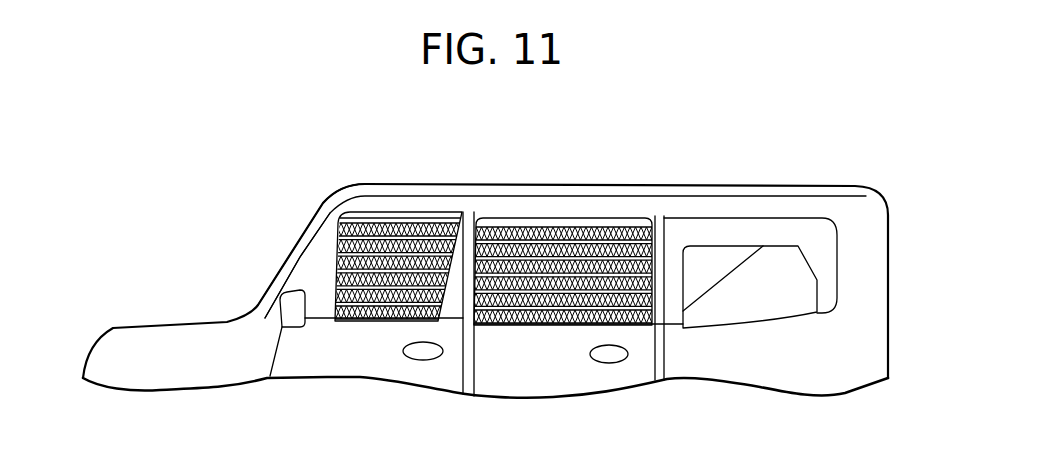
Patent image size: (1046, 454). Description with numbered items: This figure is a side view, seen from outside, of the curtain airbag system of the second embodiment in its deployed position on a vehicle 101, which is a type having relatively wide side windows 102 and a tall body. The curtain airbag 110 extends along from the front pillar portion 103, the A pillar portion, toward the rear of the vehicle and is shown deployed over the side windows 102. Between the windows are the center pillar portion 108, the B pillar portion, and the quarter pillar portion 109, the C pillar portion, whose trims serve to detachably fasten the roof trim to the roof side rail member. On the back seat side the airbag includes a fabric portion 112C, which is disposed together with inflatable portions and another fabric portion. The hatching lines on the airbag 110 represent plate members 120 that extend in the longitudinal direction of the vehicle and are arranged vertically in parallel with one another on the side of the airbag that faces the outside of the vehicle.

The vehicle 101 is at (172, 282).
The side window 102 is at (405, 221).
The front pillar portion 103 is at (305, 259).
The center pillar portion 108 is at (475, 231).
The quarter pillar portion 109 is at (674, 241).
The curtain airbag 110 is at (574, 227).
The fabric portion 112C is at (718, 253).
The plate member 120 is at (338, 264).